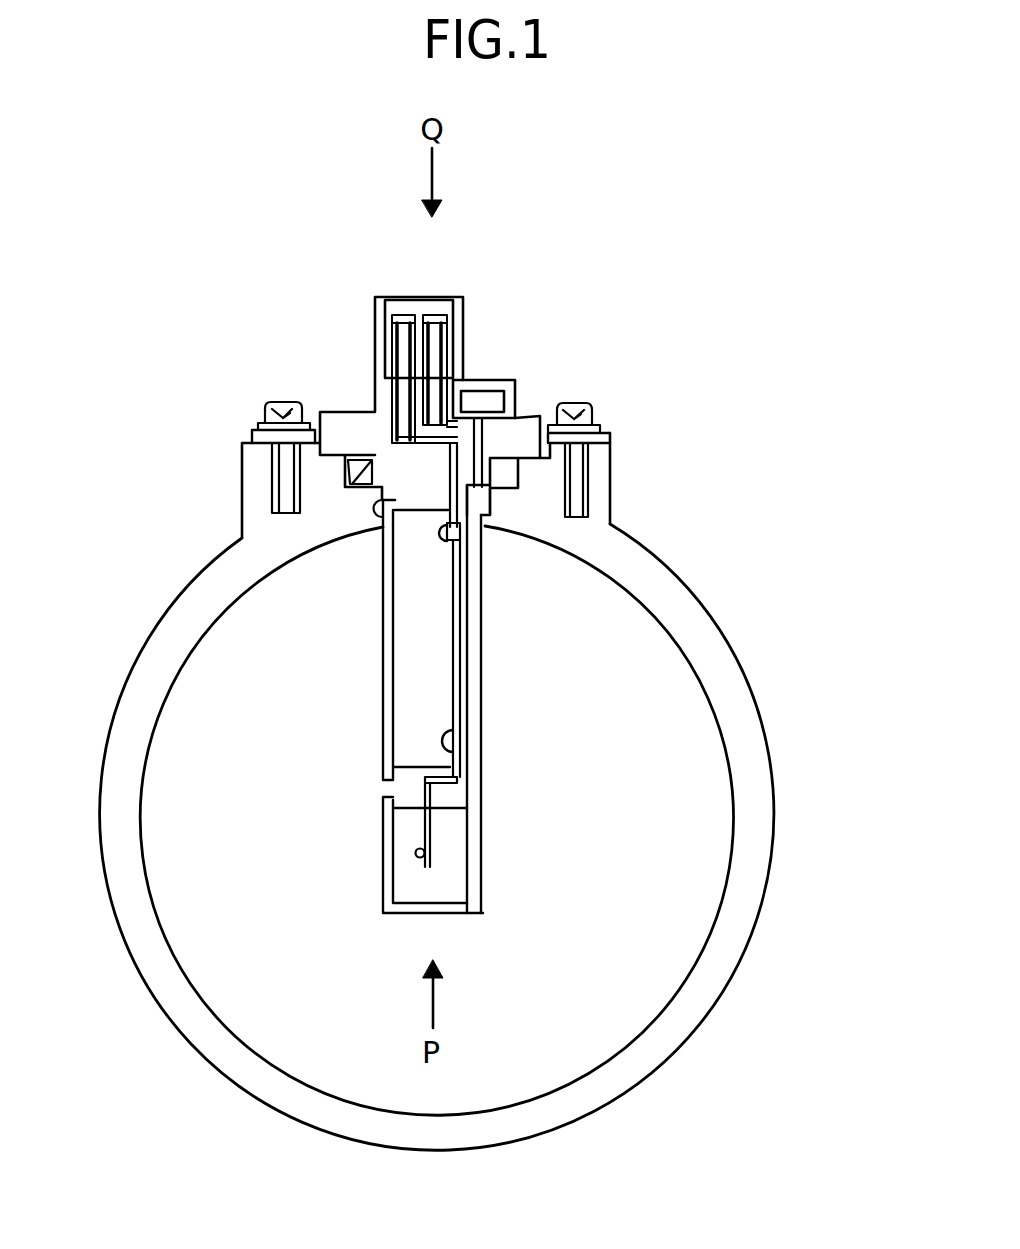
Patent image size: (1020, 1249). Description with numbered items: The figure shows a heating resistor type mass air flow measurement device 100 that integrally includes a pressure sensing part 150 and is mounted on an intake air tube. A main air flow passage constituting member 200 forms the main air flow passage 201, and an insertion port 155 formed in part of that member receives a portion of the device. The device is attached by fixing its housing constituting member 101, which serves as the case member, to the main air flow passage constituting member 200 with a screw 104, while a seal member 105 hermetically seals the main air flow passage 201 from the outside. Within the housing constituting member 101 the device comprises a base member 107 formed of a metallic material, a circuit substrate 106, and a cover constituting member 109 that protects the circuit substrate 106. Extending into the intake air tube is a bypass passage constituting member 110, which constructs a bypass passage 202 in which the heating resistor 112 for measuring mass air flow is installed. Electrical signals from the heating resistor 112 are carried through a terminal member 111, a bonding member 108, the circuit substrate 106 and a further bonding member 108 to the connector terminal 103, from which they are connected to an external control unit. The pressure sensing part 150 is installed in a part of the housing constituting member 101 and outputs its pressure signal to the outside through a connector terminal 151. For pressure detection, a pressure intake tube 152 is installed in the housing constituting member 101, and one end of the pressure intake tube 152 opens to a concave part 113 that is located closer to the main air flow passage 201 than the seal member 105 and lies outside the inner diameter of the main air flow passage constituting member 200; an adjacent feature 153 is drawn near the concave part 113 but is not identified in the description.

The heating resistor type mass air flow measurement device 100 is at (436, 631).
The housing constituting member 101 is at (357, 420).
The connector terminal 103 is at (434, 330).
The screw 104 is at (272, 402).
The seal member 105 is at (612, 456).
The circuit substrate 106 is at (457, 680).
The base member 107 is at (483, 700).
The bonding member 108 is at (440, 540).
The cover constituting member 109 is at (383, 735).
The bypass passage constituting member 110 is at (402, 912).
The terminal member 111 is at (432, 828).
The heating resistor 112 is at (415, 853).
The concave part 113 is at (482, 503).
The pressure sensing part 150 is at (488, 400).
The connector terminal 151 is at (437, 312).
The pressure intake tube 152 is at (482, 440).
The holding portion 153 is at (485, 530).
The insertion port 155 is at (375, 505).
The main air flow passage constituting member 200 is at (740, 743).
The main air flow passage 201 is at (700, 857).
The bypass passage 202 is at (443, 893).